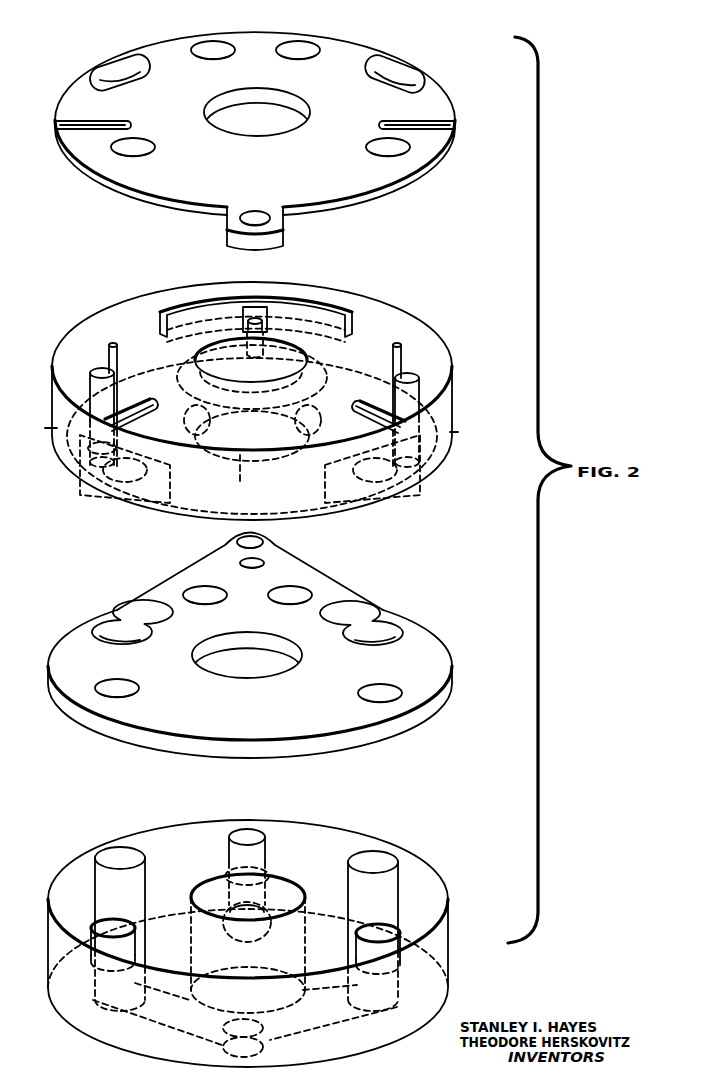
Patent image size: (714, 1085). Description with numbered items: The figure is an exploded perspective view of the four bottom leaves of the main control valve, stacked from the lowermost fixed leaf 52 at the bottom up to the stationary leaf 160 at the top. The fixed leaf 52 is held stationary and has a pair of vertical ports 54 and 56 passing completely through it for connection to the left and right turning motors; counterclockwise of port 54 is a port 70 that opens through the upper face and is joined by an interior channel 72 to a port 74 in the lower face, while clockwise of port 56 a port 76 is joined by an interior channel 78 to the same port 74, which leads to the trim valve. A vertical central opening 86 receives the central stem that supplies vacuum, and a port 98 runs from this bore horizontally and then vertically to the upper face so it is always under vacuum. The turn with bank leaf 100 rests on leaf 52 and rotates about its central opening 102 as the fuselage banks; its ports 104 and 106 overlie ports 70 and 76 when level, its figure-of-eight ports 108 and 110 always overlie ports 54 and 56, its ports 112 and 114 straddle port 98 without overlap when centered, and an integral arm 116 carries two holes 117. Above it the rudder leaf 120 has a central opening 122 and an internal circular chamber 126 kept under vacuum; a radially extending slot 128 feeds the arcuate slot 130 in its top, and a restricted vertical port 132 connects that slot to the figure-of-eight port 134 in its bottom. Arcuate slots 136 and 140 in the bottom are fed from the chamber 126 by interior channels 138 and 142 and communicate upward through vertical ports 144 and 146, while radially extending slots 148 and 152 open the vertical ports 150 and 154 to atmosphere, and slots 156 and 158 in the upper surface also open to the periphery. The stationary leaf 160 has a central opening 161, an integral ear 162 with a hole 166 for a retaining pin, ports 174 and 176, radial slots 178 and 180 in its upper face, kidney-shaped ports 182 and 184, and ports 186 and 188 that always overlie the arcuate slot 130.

The lowermost fixed leaf 52 is at (63, 1005).
The vertical port 54 is at (133, 857).
The vertical port 56 is at (378, 857).
The port 70 is at (95, 923).
The interior channel 72 is at (165, 1012).
The port 74 is at (263, 1050).
The port 76 is at (398, 925).
The interior channel 78 is at (338, 1007).
The vertical central opening 86 is at (282, 892).
The port 98 is at (250, 835).
The turn with bank leaf 100 is at (57, 650).
The central opening 102 is at (275, 665).
The port 104 is at (127, 685).
The port 106 is at (383, 688).
The figure-of-eight port 108 is at (133, 607).
The figure-of-eight port 110 is at (358, 608).
The port 112 is at (203, 590).
The port 114 is at (277, 590).
The integral arm 116 is at (222, 545).
The holes 117 is at (262, 562).
The rudder leaf 120 is at (70, 338).
The central opening 122 is at (242, 467).
The circular chamber 126 is at (183, 370).
The radially extending slot 128 is at (267, 318).
The arcuate slot 130 is at (340, 310).
The vertical port 132 is at (250, 317).
The figure-of-eight port 134 is at (310, 360).
The arcuate slot 136 is at (170, 498).
The interior channel 138 is at (160, 460).
The second arcuate slot 140 is at (327, 498).
The interior channel 142 is at (328, 455).
The vertical port 144 is at (98, 372).
The vertical port 146 is at (410, 372).
The first radially extending slot 148 is at (57, 428).
The vertical port 150 is at (113, 343).
The second radially extending slot 152 is at (452, 432).
The vertical port 154 is at (395, 345).
The radially extending slot 156 is at (140, 407).
The radially extending slot 158 is at (362, 407).
The stationary leaf 160 is at (73, 92).
The central opening 161 is at (290, 123).
The integral ear 162 is at (237, 237).
The hole 166 is at (247, 213).
The first port 174 is at (138, 143).
The second port 176 is at (378, 145).
The slot 178 is at (55, 123).
The second slot 180 is at (445, 128).
The kidney-shaped port 182 is at (105, 72).
The kidney-shaped port 184 is at (393, 73).
The port 186 is at (223, 43).
The port 188 is at (303, 43).